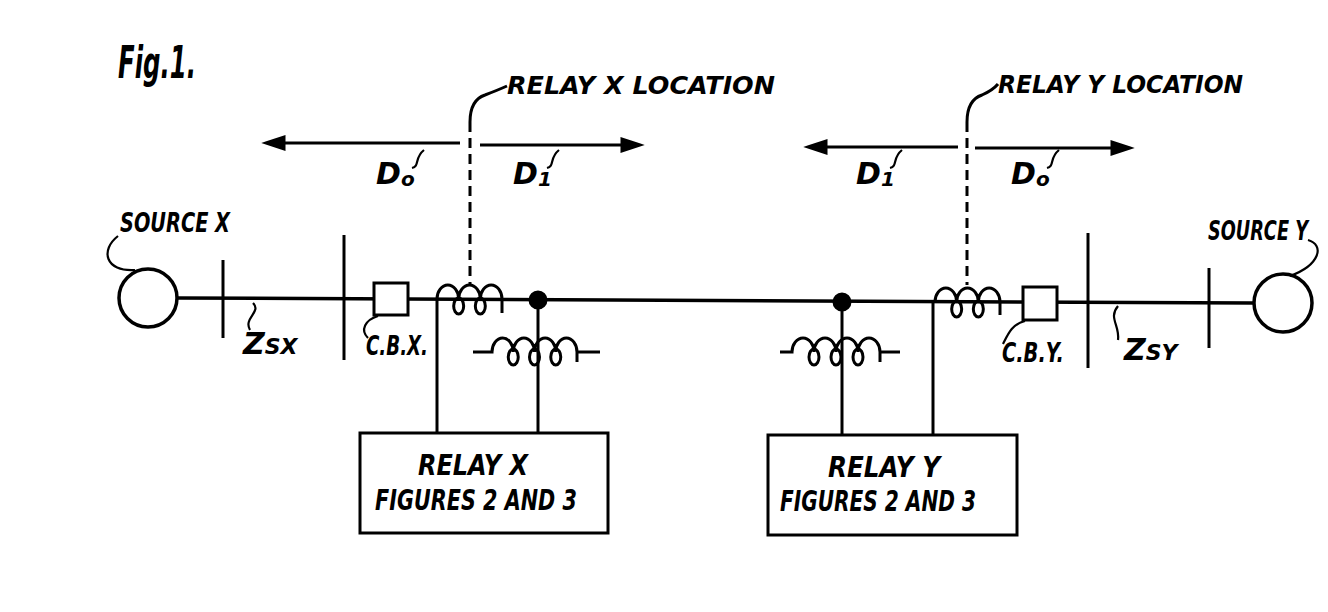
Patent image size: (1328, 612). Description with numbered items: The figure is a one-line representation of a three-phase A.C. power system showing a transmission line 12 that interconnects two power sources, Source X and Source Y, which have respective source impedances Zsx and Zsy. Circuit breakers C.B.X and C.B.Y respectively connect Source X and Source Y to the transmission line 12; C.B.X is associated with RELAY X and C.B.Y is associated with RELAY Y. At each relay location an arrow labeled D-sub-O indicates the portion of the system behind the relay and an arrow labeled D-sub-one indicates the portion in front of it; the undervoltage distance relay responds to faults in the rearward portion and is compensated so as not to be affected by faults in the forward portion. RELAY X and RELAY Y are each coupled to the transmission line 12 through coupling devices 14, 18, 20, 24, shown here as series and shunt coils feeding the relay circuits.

The transmission line 12 is at (416, 283).
The coupling device 14 is at (573, 342).
The coupling device 18 is at (822, 345).
The coupling device 20 is at (486, 289).
The coupling device 24 is at (976, 290).